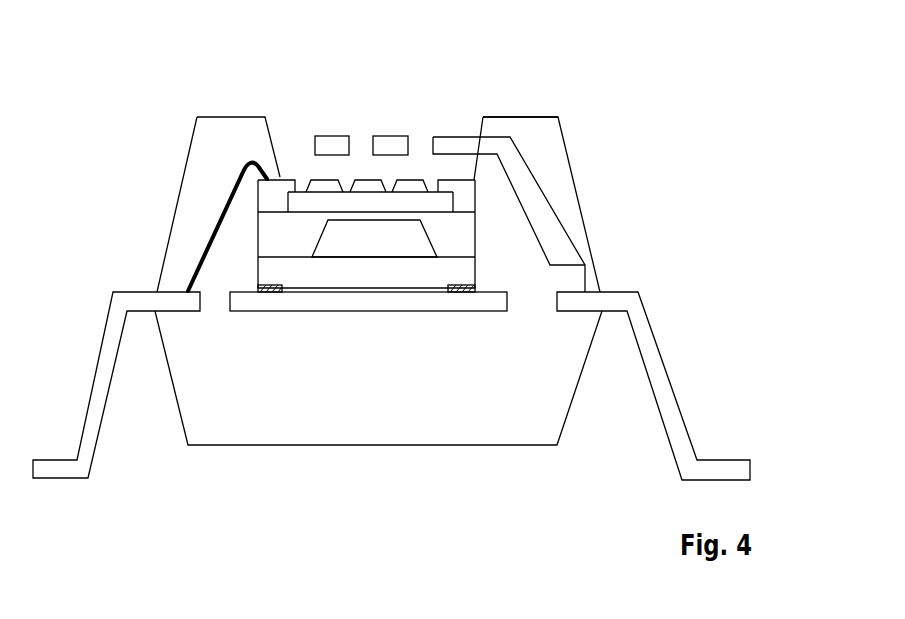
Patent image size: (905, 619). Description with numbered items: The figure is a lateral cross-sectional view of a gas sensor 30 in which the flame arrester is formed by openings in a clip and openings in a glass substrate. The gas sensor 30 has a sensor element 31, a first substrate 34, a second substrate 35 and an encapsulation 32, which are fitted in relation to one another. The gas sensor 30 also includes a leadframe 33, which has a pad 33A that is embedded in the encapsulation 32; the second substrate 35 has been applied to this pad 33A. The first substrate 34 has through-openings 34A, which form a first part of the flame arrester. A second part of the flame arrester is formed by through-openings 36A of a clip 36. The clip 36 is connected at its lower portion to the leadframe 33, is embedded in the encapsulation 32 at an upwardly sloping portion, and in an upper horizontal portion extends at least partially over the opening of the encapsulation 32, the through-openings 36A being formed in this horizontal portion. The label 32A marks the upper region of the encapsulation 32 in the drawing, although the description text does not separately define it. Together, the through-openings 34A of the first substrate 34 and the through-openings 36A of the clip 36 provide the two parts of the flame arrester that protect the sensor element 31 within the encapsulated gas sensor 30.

The gas sensor 30 is at (627, 36).
The sensor element 31 is at (455, 233).
The encapsulation 32 is at (537, 433).
The top surface of sealing resin 32A is at (483, 117).
The leadframe 33 is at (110, 347).
The pad 33A is at (342, 300).
The first substrate 34 is at (273, 203).
The through-openings 34A is at (303, 190).
The second substrate 35 is at (463, 273).
The clip 36 is at (510, 170).
The through-openings 36A is at (420, 143).